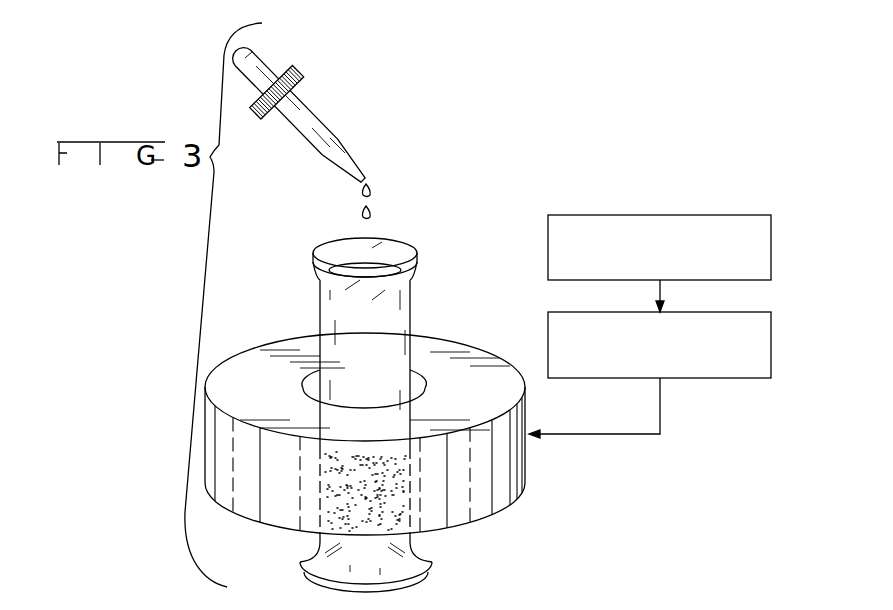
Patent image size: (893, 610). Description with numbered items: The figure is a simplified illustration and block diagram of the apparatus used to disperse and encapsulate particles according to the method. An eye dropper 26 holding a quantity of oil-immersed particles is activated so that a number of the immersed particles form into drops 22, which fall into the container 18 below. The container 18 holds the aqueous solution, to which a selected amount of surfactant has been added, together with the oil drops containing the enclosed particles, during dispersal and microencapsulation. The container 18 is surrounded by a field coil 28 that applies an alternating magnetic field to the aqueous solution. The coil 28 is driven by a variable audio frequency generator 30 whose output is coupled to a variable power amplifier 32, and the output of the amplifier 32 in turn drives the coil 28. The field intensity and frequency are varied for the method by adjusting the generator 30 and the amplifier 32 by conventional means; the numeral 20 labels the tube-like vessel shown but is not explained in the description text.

The container 18 is at (320, 547).
The cylindrical tube 20 is at (340, 270).
The drops 22 is at (372, 191).
The eye dropper 26 is at (325, 122).
The field coil 28 is at (512, 488).
The variable audio frequency generator 30 is at (562, 214).
The variable power amplifier 32 is at (556, 311).